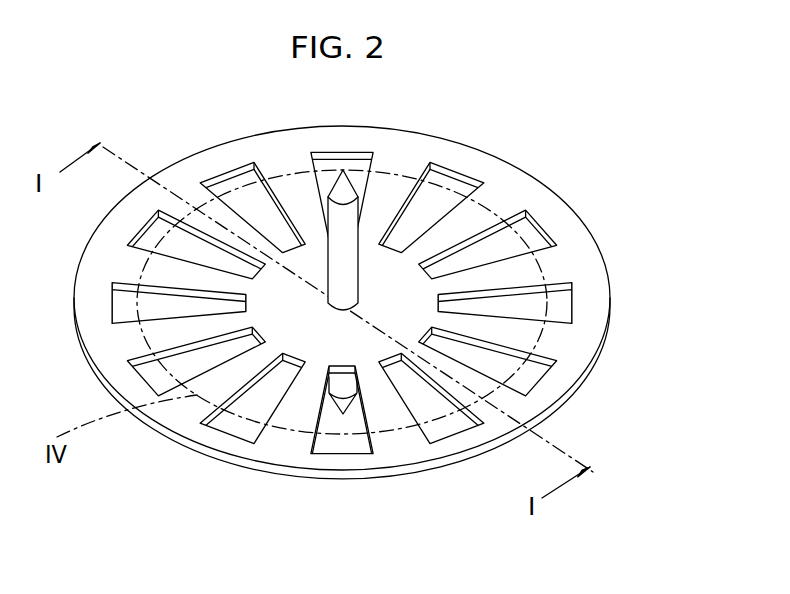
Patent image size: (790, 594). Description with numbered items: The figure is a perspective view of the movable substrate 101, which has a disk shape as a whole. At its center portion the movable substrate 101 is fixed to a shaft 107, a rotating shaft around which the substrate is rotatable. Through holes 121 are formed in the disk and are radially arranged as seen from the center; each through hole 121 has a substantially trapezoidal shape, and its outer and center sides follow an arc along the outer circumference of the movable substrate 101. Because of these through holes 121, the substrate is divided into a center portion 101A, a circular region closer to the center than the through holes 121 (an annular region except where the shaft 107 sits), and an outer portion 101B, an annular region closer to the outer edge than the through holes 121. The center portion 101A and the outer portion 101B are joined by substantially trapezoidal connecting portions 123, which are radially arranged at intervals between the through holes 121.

The movable substrate 101 is at (399, 331).
The center portion 101A is at (395, 282).
The outer portion 101B is at (582, 260).
The shaft 107 is at (343, 217).
The through holes 121 is at (440, 432).
The connecting portions 123 is at (560, 338).